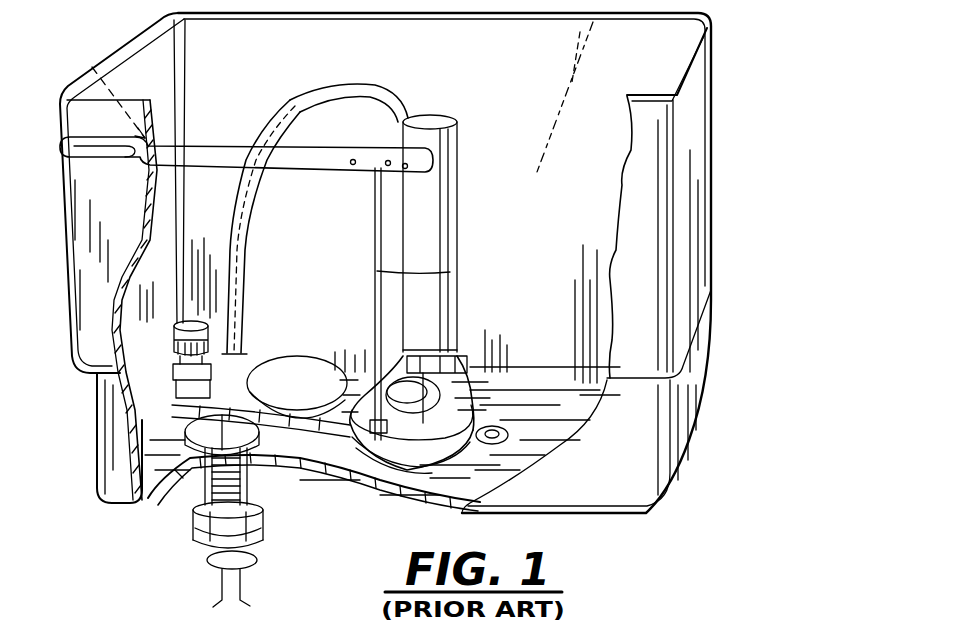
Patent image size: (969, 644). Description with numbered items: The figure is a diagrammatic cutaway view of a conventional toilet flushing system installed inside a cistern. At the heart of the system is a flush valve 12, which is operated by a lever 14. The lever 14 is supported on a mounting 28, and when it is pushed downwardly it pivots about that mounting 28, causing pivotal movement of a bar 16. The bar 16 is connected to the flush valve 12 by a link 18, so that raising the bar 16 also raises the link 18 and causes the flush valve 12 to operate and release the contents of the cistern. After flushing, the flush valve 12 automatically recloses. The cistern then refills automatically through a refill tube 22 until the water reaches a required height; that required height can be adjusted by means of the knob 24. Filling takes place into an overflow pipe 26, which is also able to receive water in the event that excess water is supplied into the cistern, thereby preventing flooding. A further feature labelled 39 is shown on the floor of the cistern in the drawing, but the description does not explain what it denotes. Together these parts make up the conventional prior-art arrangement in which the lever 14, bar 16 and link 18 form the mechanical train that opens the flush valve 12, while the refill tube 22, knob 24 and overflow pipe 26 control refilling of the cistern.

The flush valve 12 is at (410, 442).
The lever 14 is at (123, 158).
The bar 16 is at (228, 155).
The link 18 is at (450, 272).
The refill tube 22 is at (340, 93).
The knob 24 is at (172, 346).
The overflow pipe 26 is at (460, 212).
The mounting 28 is at (87, 60).
The tank drain boss 39 is at (496, 426).